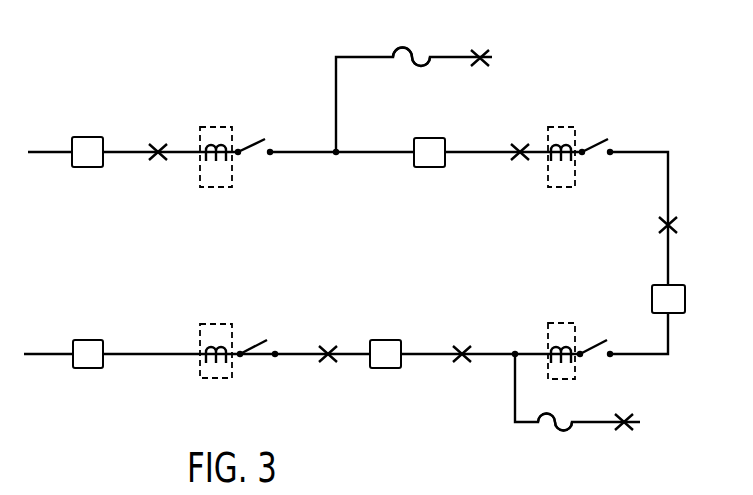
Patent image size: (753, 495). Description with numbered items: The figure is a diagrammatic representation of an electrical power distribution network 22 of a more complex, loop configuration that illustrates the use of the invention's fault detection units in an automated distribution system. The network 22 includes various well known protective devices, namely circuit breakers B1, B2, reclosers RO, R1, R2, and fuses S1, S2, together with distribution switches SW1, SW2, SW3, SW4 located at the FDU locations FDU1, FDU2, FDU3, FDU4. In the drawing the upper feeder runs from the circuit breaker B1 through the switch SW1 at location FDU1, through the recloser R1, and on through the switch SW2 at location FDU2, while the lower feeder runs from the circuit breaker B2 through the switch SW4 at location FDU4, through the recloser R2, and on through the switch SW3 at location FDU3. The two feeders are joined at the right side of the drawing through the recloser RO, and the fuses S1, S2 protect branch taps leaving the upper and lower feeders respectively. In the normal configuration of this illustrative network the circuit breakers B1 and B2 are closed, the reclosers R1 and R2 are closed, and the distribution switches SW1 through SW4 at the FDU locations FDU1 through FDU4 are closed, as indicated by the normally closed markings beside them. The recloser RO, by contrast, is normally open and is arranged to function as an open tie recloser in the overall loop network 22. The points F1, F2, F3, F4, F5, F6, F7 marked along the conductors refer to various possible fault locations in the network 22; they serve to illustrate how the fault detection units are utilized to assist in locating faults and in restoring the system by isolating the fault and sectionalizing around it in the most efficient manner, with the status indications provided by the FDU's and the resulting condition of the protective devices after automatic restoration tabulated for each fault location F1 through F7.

The distribution network 22 is at (110, 251).
The circuit breaker B1 is at (87, 152).
The circuit breaker B2 is at (88, 354).
The fault location F1 is at (159, 134).
The fault location F2 is at (477, 41).
The fault location F3 is at (686, 223).
The fault location F4 is at (620, 440).
The fault location F5 is at (459, 339).
The fault location F6 is at (324, 339).
The fault location F7 is at (517, 135).
The distribution switch SW1 is at (269, 151).
The distribution switch SW2 is at (612, 148).
The distribution switch SW3 is at (603, 353).
The distribution switch SW4 is at (263, 353).
The FDU location FDU1 is at (211, 194).
The FDU location FDU2 is at (561, 194).
The FDU location FDU3 is at (561, 317).
The FDU location FDU4 is at (219, 318).
The recloser R1 is at (433, 166).
The recloser R2 is at (386, 371).
The recloser RO is at (687, 313).
The fuse S1 is at (410, 67).
The fuse S2 is at (552, 415).